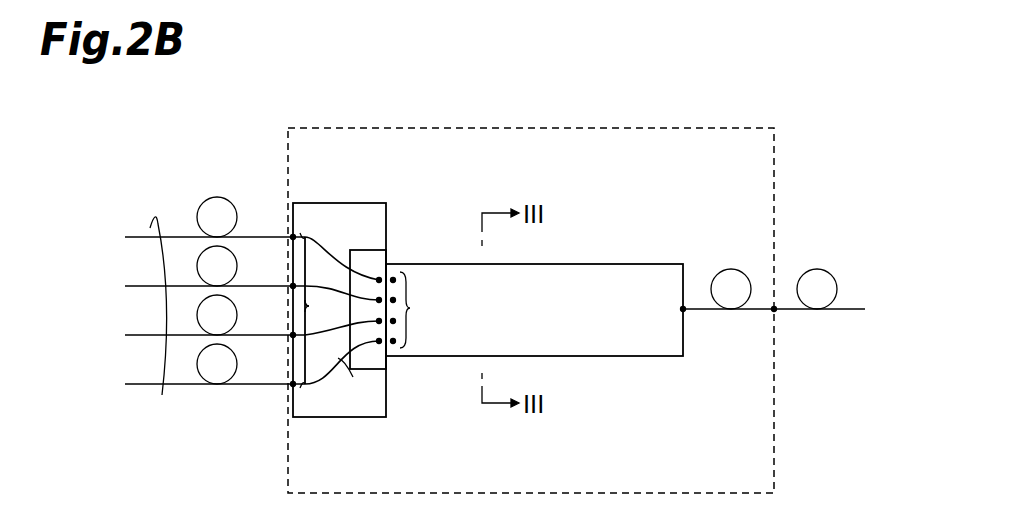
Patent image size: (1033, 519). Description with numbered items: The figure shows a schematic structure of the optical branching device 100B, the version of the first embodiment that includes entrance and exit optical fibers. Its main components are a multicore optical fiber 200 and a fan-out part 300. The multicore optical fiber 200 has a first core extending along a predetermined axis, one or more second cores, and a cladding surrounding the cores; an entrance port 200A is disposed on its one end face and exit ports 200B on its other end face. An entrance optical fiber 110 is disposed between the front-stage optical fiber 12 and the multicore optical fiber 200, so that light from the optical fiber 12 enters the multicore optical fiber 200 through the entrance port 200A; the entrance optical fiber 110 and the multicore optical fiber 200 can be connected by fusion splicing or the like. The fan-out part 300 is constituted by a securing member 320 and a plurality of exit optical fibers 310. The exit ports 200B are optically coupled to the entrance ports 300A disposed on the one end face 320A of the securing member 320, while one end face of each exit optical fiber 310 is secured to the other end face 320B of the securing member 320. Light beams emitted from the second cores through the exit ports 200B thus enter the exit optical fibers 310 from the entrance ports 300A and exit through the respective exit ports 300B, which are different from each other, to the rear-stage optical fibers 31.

The optical branching device 100B is at (643, 127).
The optical fibers 31 is at (162, 395).
The fan-out part 300 is at (373, 417).
The exit optical fibers 310 is at (330, 362).
The entrance ports 300A is at (362, 308).
The exit ports 300B is at (308, 308).
The securing member 320 is at (372, 370).
The one end face 320A is at (387, 362).
The other end face 320B is at (353, 377).
The multicore optical fiber 200 is at (600, 355).
The entrance port 200A is at (680, 307).
The exit ports 200B is at (410, 308).
The entrance optical fiber 110 is at (707, 313).
The optical fiber 12 is at (792, 313).